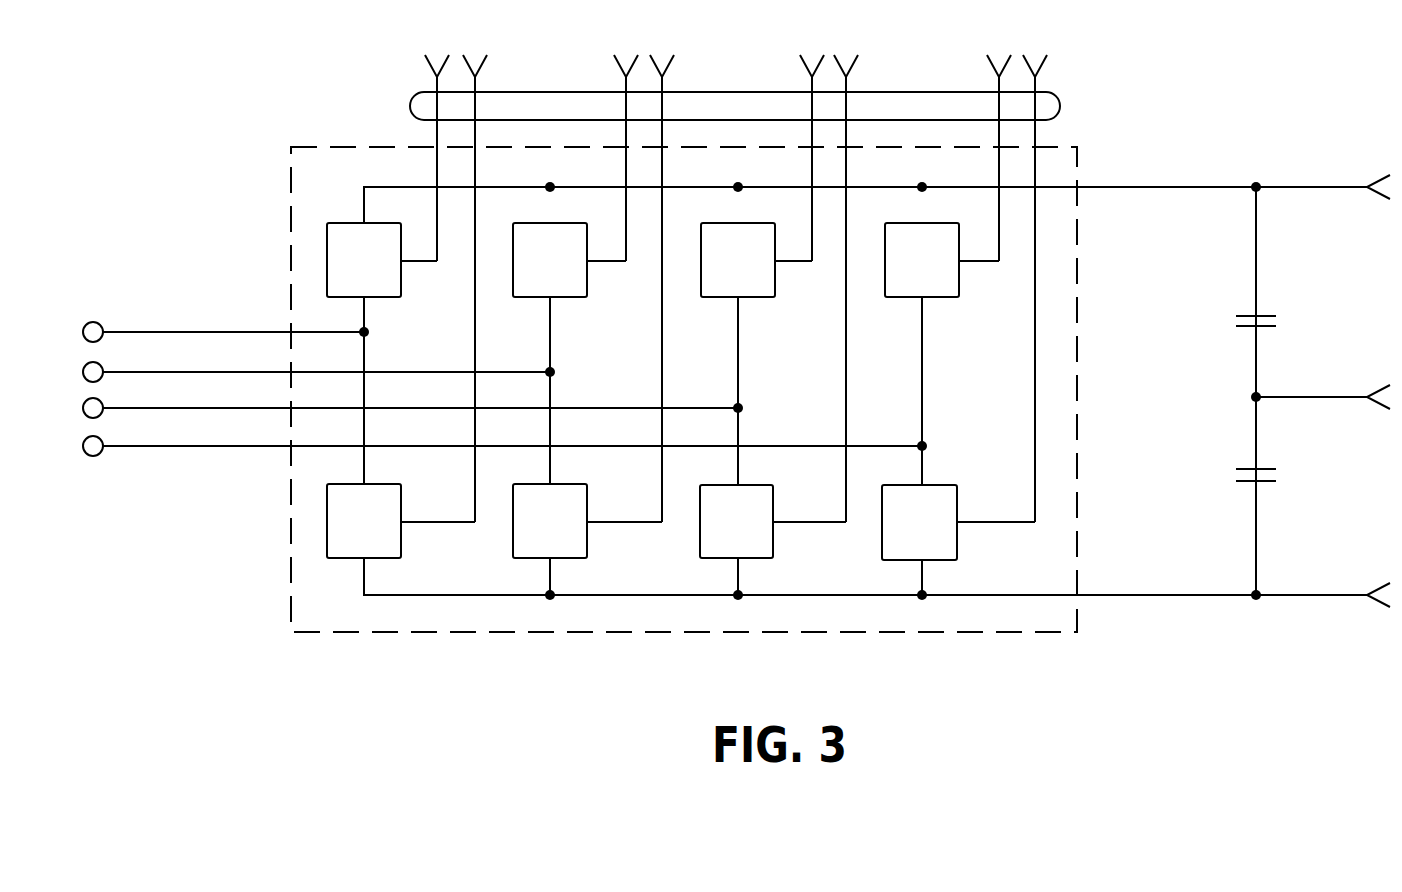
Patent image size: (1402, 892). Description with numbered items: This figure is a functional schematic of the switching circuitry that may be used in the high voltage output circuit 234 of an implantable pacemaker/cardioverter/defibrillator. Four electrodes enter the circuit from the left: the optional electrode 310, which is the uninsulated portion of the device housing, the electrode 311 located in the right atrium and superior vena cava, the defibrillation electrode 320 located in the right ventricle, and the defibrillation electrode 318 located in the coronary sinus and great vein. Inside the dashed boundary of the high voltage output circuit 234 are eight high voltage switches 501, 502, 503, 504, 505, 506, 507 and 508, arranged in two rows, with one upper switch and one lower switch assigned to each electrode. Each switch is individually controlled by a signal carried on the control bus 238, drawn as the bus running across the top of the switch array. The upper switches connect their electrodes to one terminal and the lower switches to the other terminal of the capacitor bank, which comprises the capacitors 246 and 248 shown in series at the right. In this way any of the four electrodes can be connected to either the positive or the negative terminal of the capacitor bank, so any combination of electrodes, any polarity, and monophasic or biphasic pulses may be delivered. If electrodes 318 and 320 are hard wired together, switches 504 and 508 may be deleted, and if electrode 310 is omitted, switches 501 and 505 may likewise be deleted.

The high voltage output circuit 234 is at (1077, 147).
The control bus 238 is at (408, 105).
The capacitor 246 is at (1262, 315).
The capacitor 248 is at (1262, 469).
The electrode 310 is at (193, 331).
The electrode 311 is at (196, 371).
The electrode 320 is at (203, 407).
The electrode 318 is at (203, 445).
The high voltage switch 501 is at (380, 297).
The high voltage switch 502 is at (568, 297).
The high voltage switch 503 is at (756, 297).
The high voltage switch 504 is at (942, 297).
The high voltage switch 505 is at (385, 558).
The high voltage switch 506 is at (572, 558).
The high voltage switch 507 is at (755, 558).
The high voltage switch 508 is at (940, 560).